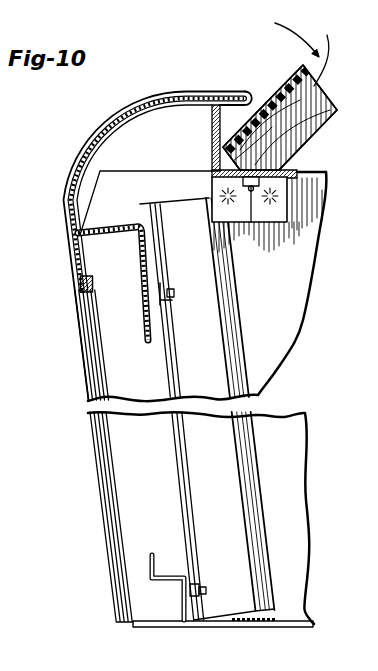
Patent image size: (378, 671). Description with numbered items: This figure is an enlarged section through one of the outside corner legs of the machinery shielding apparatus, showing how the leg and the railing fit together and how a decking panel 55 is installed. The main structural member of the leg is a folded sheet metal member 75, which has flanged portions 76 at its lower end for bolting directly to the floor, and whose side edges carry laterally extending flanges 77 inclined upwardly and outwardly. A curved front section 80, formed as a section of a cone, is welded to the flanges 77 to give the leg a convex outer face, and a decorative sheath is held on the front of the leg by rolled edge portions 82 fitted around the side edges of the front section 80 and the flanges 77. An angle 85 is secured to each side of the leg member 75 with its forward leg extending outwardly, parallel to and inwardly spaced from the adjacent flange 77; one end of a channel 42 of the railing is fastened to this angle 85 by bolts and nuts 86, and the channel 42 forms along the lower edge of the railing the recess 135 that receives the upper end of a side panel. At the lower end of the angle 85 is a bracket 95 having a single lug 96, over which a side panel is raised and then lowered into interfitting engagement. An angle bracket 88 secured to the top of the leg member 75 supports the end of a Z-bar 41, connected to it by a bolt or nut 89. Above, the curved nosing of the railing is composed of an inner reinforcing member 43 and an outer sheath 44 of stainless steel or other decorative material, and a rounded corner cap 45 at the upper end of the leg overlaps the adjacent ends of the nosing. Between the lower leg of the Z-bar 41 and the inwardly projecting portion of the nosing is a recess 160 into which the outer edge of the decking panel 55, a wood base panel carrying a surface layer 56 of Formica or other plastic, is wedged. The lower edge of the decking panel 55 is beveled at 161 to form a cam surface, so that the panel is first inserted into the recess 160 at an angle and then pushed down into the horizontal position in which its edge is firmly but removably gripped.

The Z-bar 41 is at (212, 137).
The channel 42 is at (105, 226).
The inner reinforcing member 43 is at (80, 157).
The outer sheath 44 is at (100, 128).
The corner cap 45 is at (160, 98).
The decking panel 55 is at (307, 49).
The surface layer 56 is at (288, 83).
The folded sheet metal member 75 is at (283, 310).
The flanged portion 76 is at (233, 627).
The laterally extending flange 77 is at (82, 302).
The curved front section 80 is at (72, 296).
The rolled edge portion 82 is at (90, 377).
The angle 85 is at (225, 443).
The bolts and nuts 86 is at (170, 296).
The angle bracket 88 is at (280, 207).
The bolt or nut 89 is at (252, 223).
The bracket 95 is at (183, 605).
The lug 96 is at (152, 557).
The recess 135 is at (105, 267).
The recess 160 is at (230, 112).
The bevel 161 is at (292, 137).